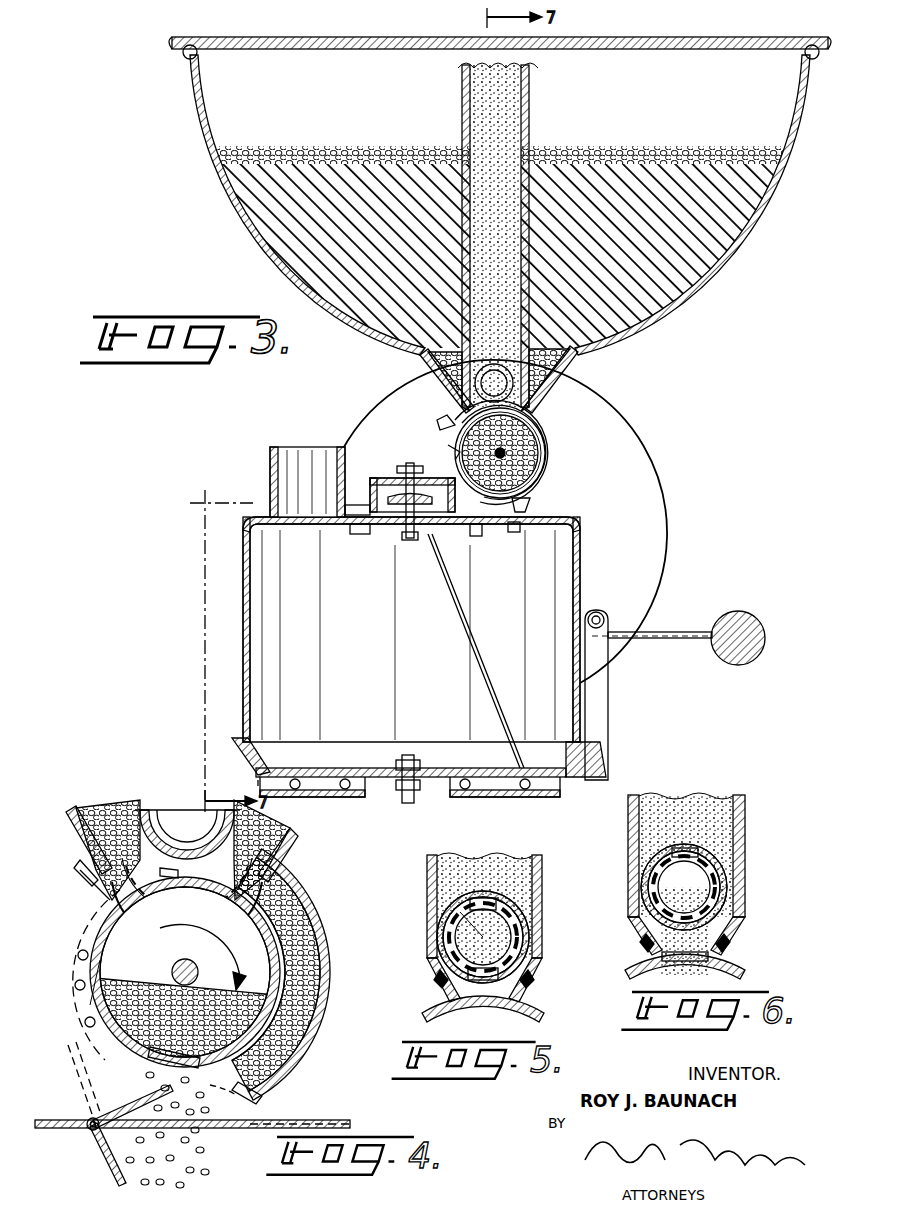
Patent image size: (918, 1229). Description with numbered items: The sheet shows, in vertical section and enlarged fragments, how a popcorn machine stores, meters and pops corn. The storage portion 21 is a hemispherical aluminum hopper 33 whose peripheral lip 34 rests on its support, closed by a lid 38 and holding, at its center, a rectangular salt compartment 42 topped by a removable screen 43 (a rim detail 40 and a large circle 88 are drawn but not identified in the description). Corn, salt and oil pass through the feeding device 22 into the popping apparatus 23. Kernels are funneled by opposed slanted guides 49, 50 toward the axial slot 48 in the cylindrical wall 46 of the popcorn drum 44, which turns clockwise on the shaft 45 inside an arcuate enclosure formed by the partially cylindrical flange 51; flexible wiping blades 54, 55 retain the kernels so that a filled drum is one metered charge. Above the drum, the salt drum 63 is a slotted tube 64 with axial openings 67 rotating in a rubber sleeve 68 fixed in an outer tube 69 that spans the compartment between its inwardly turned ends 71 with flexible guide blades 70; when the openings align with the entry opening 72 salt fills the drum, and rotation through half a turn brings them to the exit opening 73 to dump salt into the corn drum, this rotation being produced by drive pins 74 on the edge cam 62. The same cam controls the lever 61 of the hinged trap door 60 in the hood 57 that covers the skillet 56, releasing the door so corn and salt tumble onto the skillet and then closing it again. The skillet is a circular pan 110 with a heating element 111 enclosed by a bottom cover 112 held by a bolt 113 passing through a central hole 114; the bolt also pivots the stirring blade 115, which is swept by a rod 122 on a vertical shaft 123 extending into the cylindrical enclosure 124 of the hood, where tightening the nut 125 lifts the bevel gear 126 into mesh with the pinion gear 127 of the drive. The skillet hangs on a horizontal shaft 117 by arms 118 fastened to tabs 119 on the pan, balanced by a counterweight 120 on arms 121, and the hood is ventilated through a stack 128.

In FIG. 3, the storage portion 21 is at (200, 205).
In FIG. 3, the feeding device 22 is at (548, 446).
In FIG. 3, the popping apparatus 23 is at (240, 686).
In FIG. 3, the hopper 33 is at (645, 318).
In FIG. 3, the peripheral lip 34 is at (182, 50).
In FIG. 3, the lid 38 is at (370, 37).
In FIG. 3, the lid rim lip 40 is at (178, 36).
In FIG. 3, the salt compartment 42 is at (530, 110).
In FIG. 5, the salt compartment 42 is at (542, 868).
In FIG. 6, the salt compartment 42 is at (745, 805).
In FIG. 3, the screen 43 is at (505, 60).
In FIG. 3, the drum 44 is at (448, 450).
In FIG. 4, the drum 44 is at (88, 1000).
In FIG. 5, the drum 44 is at (440, 1025).
In FIG. 6, the drum 44 is at (740, 968).
In FIG. 3, the shaft 45 is at (530, 432).
In FIG. 4, the shaft 45 is at (195, 958).
In FIG. 3, the cylindrical wall 46 is at (462, 444).
In FIG. 4, the cylindrical wall 46 is at (120, 960).
In FIG. 5, the cylindrical wall 46 is at (522, 1018).
In FIG. 6, the cylindrical wall 46 is at (708, 966).
In FIG. 3, the axial slot 48 is at (532, 500).
In FIG. 4, the axial slot 48 is at (150, 1062).
In FIG. 6, the axial slot 48 is at (672, 966).
In FIG. 3, the slanted guide 49 is at (420, 362).
In FIG. 4, the slanted guide 49 is at (72, 830).
In FIG. 3, the slanted guide 50 is at (568, 362).
In FIG. 4, the slanted guide 50 is at (292, 842).
In FIG. 3, the partially cylindrical flange 51 is at (548, 460).
In FIG. 4, the partially cylindrical flange 51 is at (315, 935).
In FIG. 3, the flexible wiping blade 54 is at (516, 524).
In FIG. 4, the flexible wiping blade 54 is at (236, 1092).
In FIG. 3, the flexible wiping blade 55 is at (445, 418).
In FIG. 4, the flexible wiping blade 55 is at (90, 890).
In FIG. 3, the skillet 56 is at (256, 778).
In FIG. 3, the hood 57 is at (243, 570).
In FIG. 4, the hood 57 is at (300, 1120).
In FIG. 3, the trap door 60 is at (480, 530).
In FIG. 4, the trap door 60 is at (90, 1180).
In FIG. 4, the lever 61 is at (130, 1100).
In FIG. 4, the edge cam 62 is at (80, 874).
In FIG. 3, the salt drum 63 is at (498, 362).
In FIG. 4, the salt drum 63 is at (180, 802).
In FIG. 5, the salt drum 63 is at (518, 896).
In FIG. 6, the salt drum 63 is at (710, 850).
In FIG. 4, the tube 64 is at (210, 812).
In FIG. 5, the tube 64 is at (498, 950).
In FIG. 6, the tube 64 is at (706, 886).
In FIG. 5, the axial openings 67 is at (512, 935).
In FIG. 6, the axial openings 67 is at (715, 920).
In FIG. 4, the sleeve 68 is at (168, 812).
In FIG. 5, the sleeve 68 is at (512, 912).
In FIG. 6, the sleeve 68 is at (712, 862).
In FIG. 4, the outer tube 69 is at (182, 878).
In FIG. 5, the outer tube 69 is at (440, 893).
In FIG. 6, the outer tube 69 is at (727, 872).
In FIG. 5, the flexible guide blades 70 is at (446, 986).
In FIG. 6, the flexible guide blades 70 is at (644, 944).
In FIG. 5, the inwardly turned ends 71 is at (434, 972).
In FIG. 6, the inwardly turned ends 71 is at (640, 928).
In FIG. 5, the entry opening 72 is at (484, 905).
In FIG. 6, the entry opening 72 is at (694, 848).
In FIG. 4, the exit opening 73 is at (196, 862).
In FIG. 5, the exit opening 73 is at (482, 980).
In FIG. 4, the drive pins 74 is at (76, 960).
In FIG. 3, the drum path circle 88 is at (640, 440).
In FIG. 3, the pan 110 is at (235, 750).
In FIG. 3, the heating element 111 is at (300, 797).
In FIG. 3, the bottom cover 112 is at (508, 797).
In FIG. 3, the bolt 113 is at (412, 755).
In FIG. 3, the centrally disposed hole 114 is at (404, 758).
In FIG. 3, the stirring blade 115 is at (306, 765).
In FIG. 3, the horizontally extending shaft 117 is at (612, 612).
In FIG. 3, the arms 118 is at (610, 712).
In FIG. 3, the tabs 119 is at (583, 778).
In FIG. 3, the counterweight 120 is at (765, 624).
In FIG. 3, the arms 121 is at (655, 632).
In FIG. 3, the rod 122 is at (458, 600).
In FIG. 3, the vertically extending shaft 123 is at (400, 536).
In FIG. 3, the cylindrical enclosure 124 is at (358, 512).
In FIG. 3, the nut 125 is at (410, 468).
In FIG. 3, the bevel gear 126 is at (402, 535).
In FIG. 3, the pinion gear 127 is at (440, 498).
In FIG. 3, the stack 128 is at (268, 470).